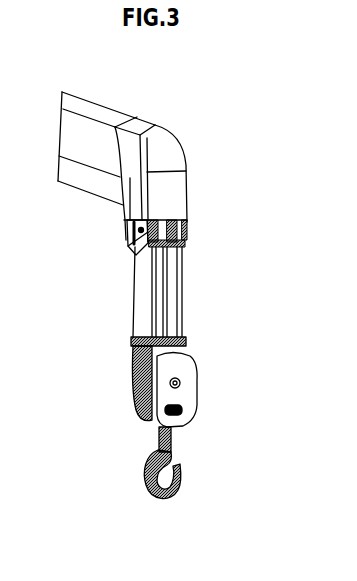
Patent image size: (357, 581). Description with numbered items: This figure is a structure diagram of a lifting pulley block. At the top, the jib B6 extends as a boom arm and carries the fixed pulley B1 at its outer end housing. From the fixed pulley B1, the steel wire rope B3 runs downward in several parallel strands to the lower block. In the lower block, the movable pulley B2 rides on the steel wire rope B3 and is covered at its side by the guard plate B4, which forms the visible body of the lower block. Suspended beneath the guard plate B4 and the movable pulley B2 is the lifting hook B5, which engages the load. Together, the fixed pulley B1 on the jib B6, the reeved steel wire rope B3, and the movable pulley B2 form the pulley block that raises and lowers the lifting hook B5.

The jib B6 is at (172, 192).
The fixed pulley B1 is at (148, 248).
The steel wire rope B3 is at (181, 310).
The movable pulley B2 is at (133, 395).
The guard plate B4 is at (178, 395).
The lifting hook B5 is at (180, 478).